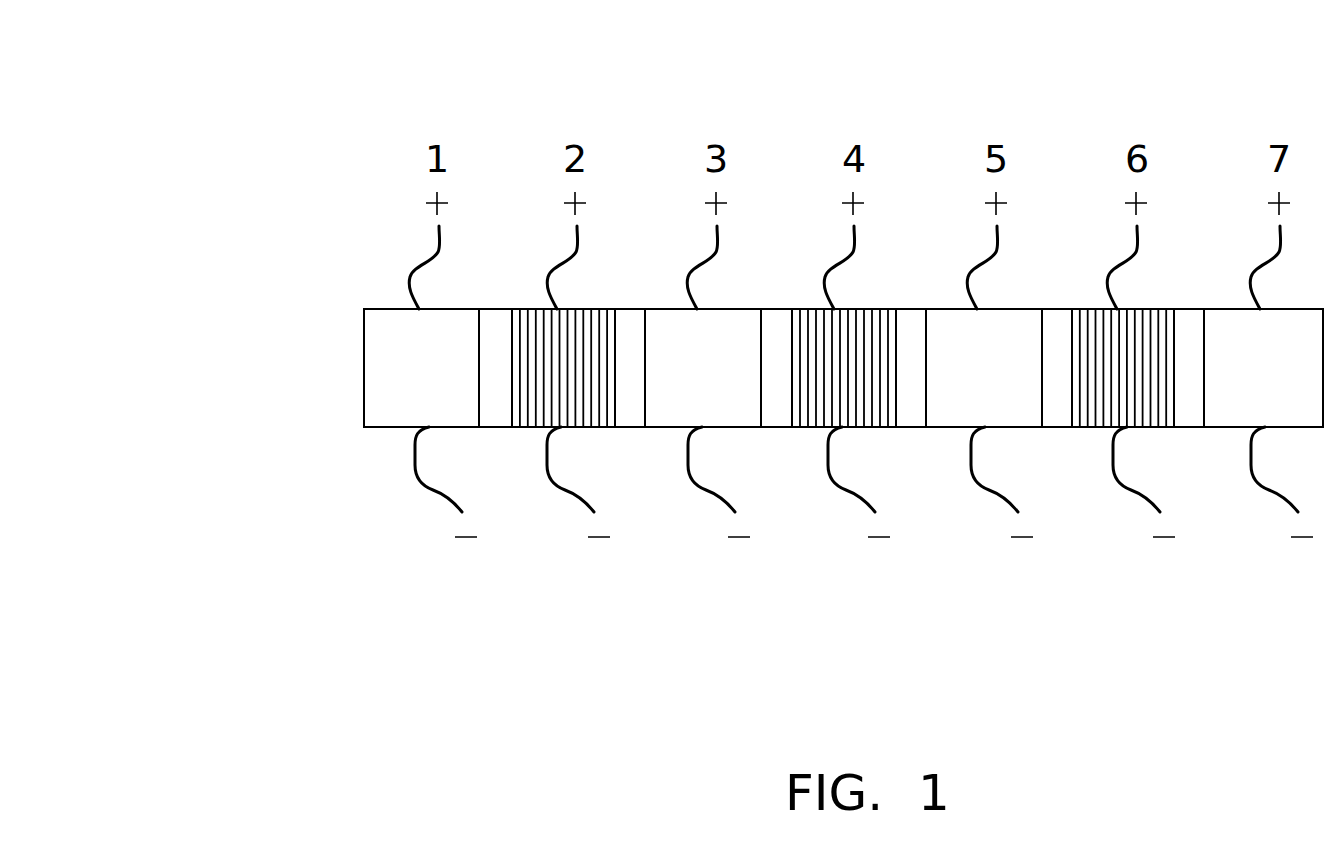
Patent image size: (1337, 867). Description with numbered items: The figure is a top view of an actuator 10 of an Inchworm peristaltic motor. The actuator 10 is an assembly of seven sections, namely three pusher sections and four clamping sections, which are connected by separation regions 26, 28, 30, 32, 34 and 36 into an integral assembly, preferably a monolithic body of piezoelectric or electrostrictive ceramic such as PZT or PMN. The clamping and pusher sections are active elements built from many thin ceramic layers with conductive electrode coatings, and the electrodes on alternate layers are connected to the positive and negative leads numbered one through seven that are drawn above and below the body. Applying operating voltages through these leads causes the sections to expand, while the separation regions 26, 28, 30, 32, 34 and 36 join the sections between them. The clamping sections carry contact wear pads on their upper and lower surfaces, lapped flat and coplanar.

The actuator 10 is at (363, 368).
The separation region 26 is at (492, 309).
The separation region 28 is at (630, 309).
The separation region 30 is at (776, 309).
The separation region 32 is at (912, 309).
The separation region 34 is at (1060, 309).
The separation region 36 is at (1188, 309).